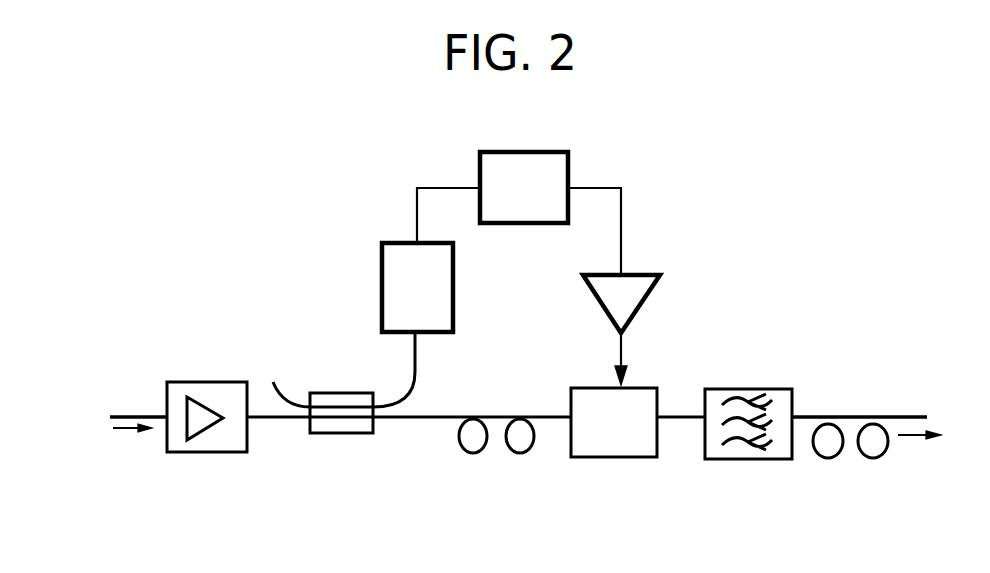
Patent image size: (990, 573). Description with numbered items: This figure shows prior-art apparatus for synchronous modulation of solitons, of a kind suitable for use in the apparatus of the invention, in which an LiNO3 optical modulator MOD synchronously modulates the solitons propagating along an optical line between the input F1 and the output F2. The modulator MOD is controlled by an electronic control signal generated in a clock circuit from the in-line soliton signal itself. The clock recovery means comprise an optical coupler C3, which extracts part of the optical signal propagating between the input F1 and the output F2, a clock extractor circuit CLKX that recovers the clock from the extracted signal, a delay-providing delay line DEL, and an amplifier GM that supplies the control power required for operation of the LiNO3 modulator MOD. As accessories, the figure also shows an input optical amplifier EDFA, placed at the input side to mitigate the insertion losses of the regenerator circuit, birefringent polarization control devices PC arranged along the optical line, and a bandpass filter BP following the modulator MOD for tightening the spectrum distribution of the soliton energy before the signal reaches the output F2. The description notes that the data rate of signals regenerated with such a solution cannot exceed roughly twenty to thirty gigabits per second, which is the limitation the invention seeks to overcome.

The input F1 is at (134, 413).
The input optical amplifier EDFA is at (222, 444).
The optical coupler C3 is at (325, 397).
The clock extractor circuit CLKX is at (387, 272).
The delay line DEL is at (525, 162).
The amplifier GM is at (642, 300).
The birefringent polarization control devices PC is at (498, 440).
The LiNO3 modulator MOD is at (642, 447).
The bandpass filter BP is at (738, 390).
The output F2 is at (902, 417).